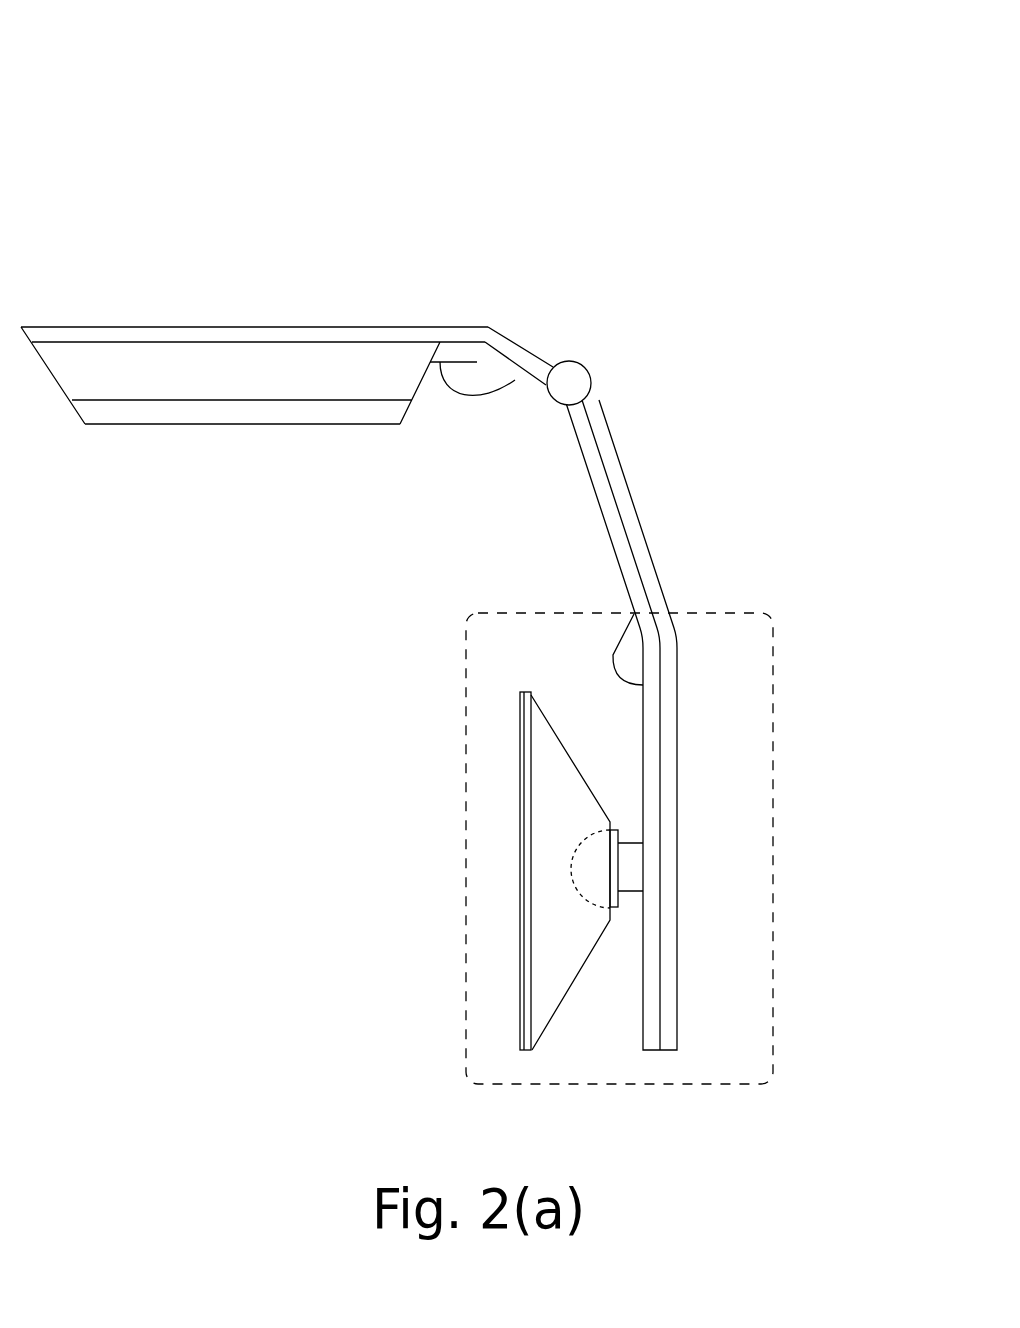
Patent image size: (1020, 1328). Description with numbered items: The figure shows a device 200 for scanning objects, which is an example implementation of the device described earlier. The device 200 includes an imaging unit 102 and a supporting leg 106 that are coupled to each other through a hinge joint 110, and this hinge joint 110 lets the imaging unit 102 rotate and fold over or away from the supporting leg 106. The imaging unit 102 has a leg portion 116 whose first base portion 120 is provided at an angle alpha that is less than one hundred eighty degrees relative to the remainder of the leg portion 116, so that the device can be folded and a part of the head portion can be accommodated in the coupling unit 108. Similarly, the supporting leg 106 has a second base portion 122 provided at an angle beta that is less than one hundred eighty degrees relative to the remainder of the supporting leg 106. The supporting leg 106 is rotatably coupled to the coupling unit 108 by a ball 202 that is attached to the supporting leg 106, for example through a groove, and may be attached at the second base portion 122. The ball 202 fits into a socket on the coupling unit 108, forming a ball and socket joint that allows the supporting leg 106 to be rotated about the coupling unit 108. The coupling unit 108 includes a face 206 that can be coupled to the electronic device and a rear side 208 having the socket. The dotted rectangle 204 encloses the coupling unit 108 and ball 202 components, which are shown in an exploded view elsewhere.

The device 200 is at (290, 133).
The imaging unit 102 is at (560, 212).
The first base portion 120 is at (312, 298).
The leg portion 116 is at (523, 340).
The hinge joint 110 is at (588, 367).
The supporting leg 106 is at (637, 500).
The second base portion 122 is at (682, 728).
The coupling unit 108 is at (562, 707).
The face 206 is at (507, 888).
The rear side 208 is at (607, 788).
The ball 202 is at (580, 895).
The dotted rectangle 204 is at (466, 993).